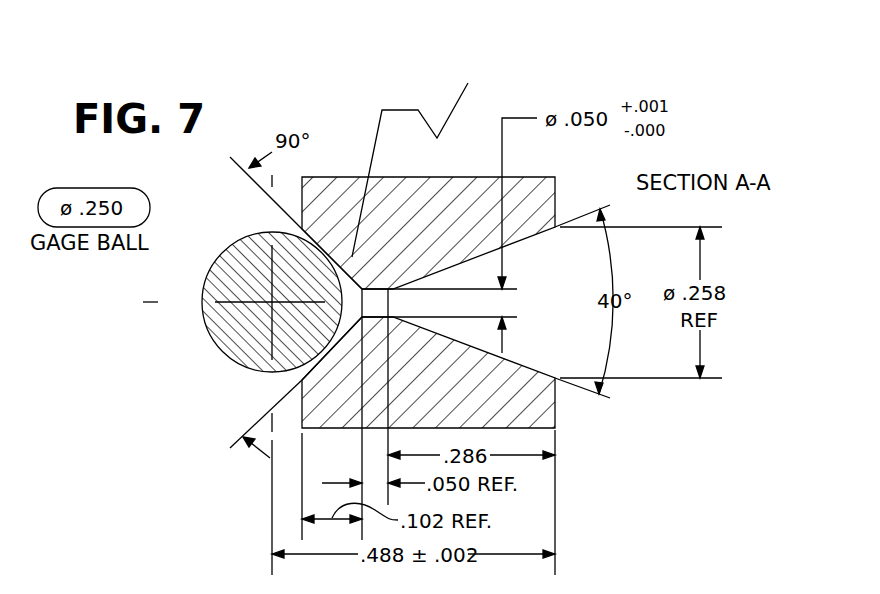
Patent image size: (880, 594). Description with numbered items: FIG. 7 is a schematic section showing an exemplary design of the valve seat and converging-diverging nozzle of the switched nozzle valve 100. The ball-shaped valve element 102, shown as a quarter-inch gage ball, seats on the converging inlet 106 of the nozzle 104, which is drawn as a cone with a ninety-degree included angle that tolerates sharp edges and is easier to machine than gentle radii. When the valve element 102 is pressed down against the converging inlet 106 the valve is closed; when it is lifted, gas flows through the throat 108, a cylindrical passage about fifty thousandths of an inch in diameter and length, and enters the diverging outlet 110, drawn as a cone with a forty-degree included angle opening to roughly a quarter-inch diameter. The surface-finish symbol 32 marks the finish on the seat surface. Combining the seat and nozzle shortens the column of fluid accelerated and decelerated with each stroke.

The switched nozzle valve 100 is at (490, 107).
The ball-shaped valve element 102 is at (233, 353).
The nozzle 104 is at (340, 177).
The converging inlet 106 is at (333, 259).
The throat 108 is at (375, 288).
The diverging outlet 110 is at (533, 337).
The surface finish designation 32 is at (410, 170).